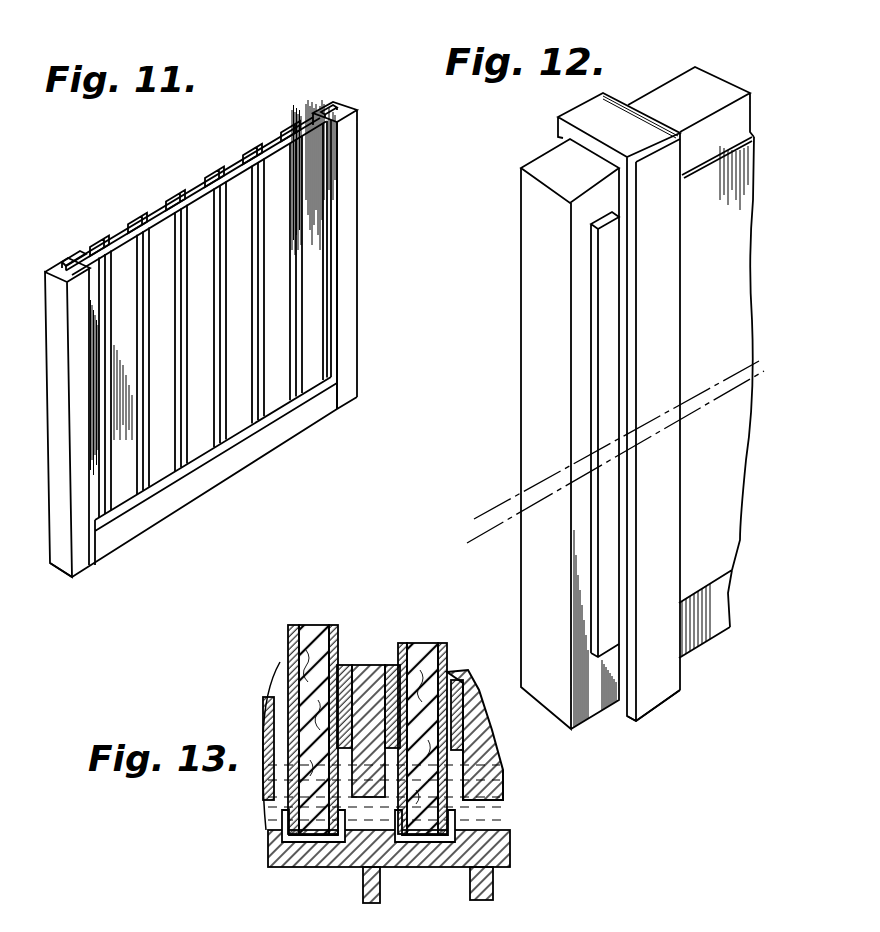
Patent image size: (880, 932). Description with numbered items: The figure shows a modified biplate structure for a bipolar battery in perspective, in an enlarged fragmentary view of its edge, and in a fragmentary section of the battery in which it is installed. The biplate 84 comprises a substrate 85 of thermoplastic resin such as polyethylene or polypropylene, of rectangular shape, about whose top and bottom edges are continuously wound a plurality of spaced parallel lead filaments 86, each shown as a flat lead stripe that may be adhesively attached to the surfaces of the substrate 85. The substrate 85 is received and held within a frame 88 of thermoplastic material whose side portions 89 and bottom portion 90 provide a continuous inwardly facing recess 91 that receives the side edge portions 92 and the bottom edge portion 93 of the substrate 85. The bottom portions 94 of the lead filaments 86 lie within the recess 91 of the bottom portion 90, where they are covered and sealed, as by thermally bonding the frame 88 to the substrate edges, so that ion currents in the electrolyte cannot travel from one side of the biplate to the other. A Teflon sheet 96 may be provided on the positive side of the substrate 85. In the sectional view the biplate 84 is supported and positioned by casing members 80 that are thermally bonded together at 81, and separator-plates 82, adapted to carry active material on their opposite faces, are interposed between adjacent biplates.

In FIG. 13, the casing members 80 is at (300, 862).
In FIG. 13, the thermal bond 81 is at (356, 893).
In FIG. 13, the separator-plates 82 is at (362, 665).
In FIG. 11, the biplate 84 is at (371, 224).
In FIG. 12, the biplate 84 is at (734, 74).
In FIG. 11, the substrate 85 is at (302, 127).
In FIG. 12, the substrate 85 is at (545, 165).
In FIG. 13, the substrate 85 is at (418, 642).
In FIG. 11, the lead filaments 86 is at (176, 196).
In FIG. 12, the lead filaments 86 is at (663, 288).
In FIG. 13, the lead filaments 86 is at (292, 646).
In FIG. 11, the frame 88 is at (222, 342).
In FIG. 13, the frame 88 is at (290, 808).
In FIG. 11, the side portions 89 is at (80, 500).
In FIG. 11, the bottom portion 90 is at (283, 432).
In FIG. 11, the recess 91 is at (66, 268).
In FIG. 11, the side edge portions 92 is at (330, 101).
In FIG. 12, the bottom edge portion 93 is at (703, 614).
In FIG. 13, the bottom edge portion 93 is at (452, 800).
In FIG. 12, the bottom portions of lead filaments 94 is at (652, 677).
In FIG. 12, the Teflon sheet 96 is at (604, 400).
In FIG. 13, the Teflon sheet 96 is at (268, 696).